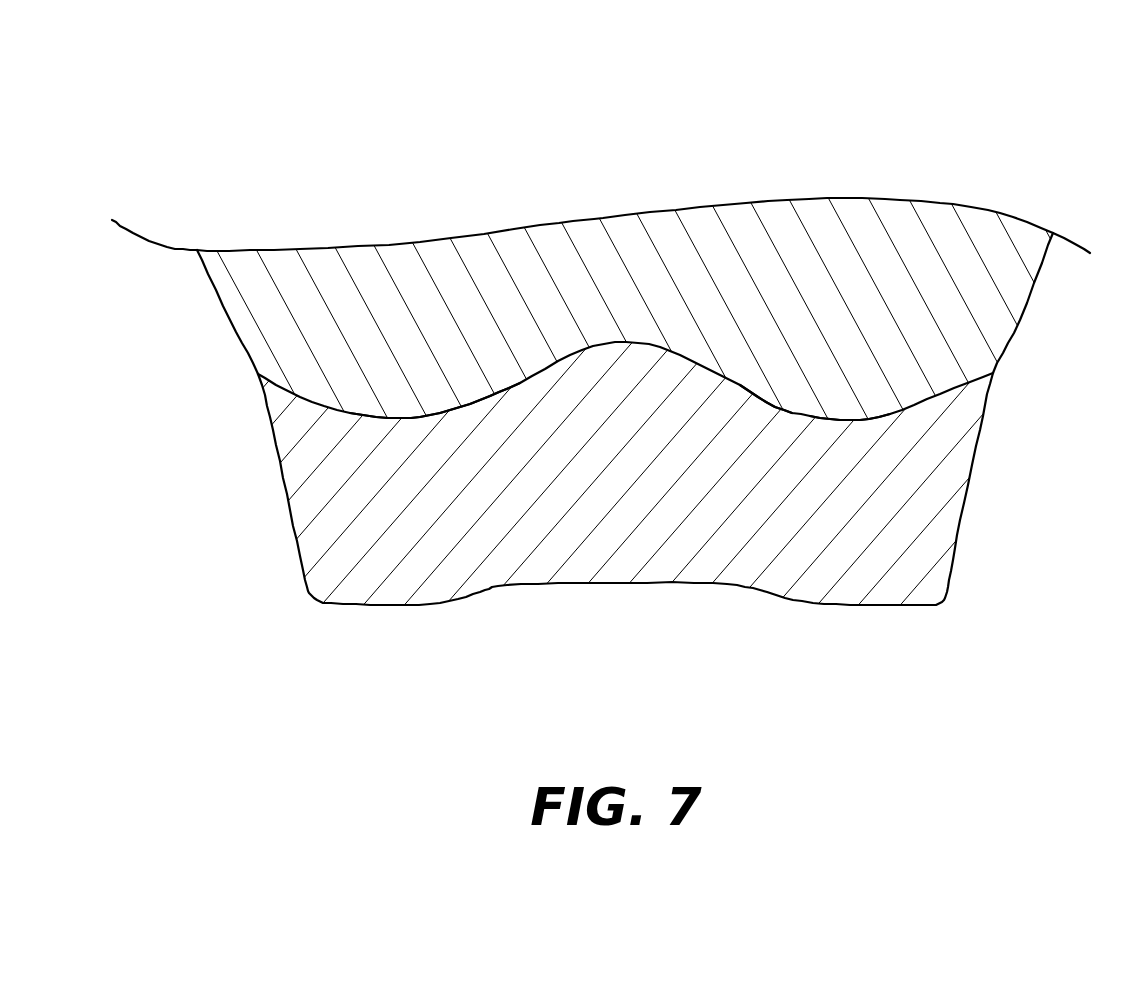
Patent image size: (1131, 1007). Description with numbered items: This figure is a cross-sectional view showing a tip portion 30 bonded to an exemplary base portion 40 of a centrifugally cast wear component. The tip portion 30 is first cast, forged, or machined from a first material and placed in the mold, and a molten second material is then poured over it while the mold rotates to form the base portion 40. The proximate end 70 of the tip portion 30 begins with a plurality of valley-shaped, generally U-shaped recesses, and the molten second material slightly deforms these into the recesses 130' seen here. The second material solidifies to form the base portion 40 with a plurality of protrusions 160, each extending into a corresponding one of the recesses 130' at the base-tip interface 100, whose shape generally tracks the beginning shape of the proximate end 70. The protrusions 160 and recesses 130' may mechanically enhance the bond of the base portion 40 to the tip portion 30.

The tip portion 30 is at (330, 513).
The base portion 40 is at (787, 223).
The proximate end 70 is at (926, 396).
The base-tip interface 100 is at (600, 343).
The recesses 130' is at (571, 274).
The protrusions 160 is at (465, 425).